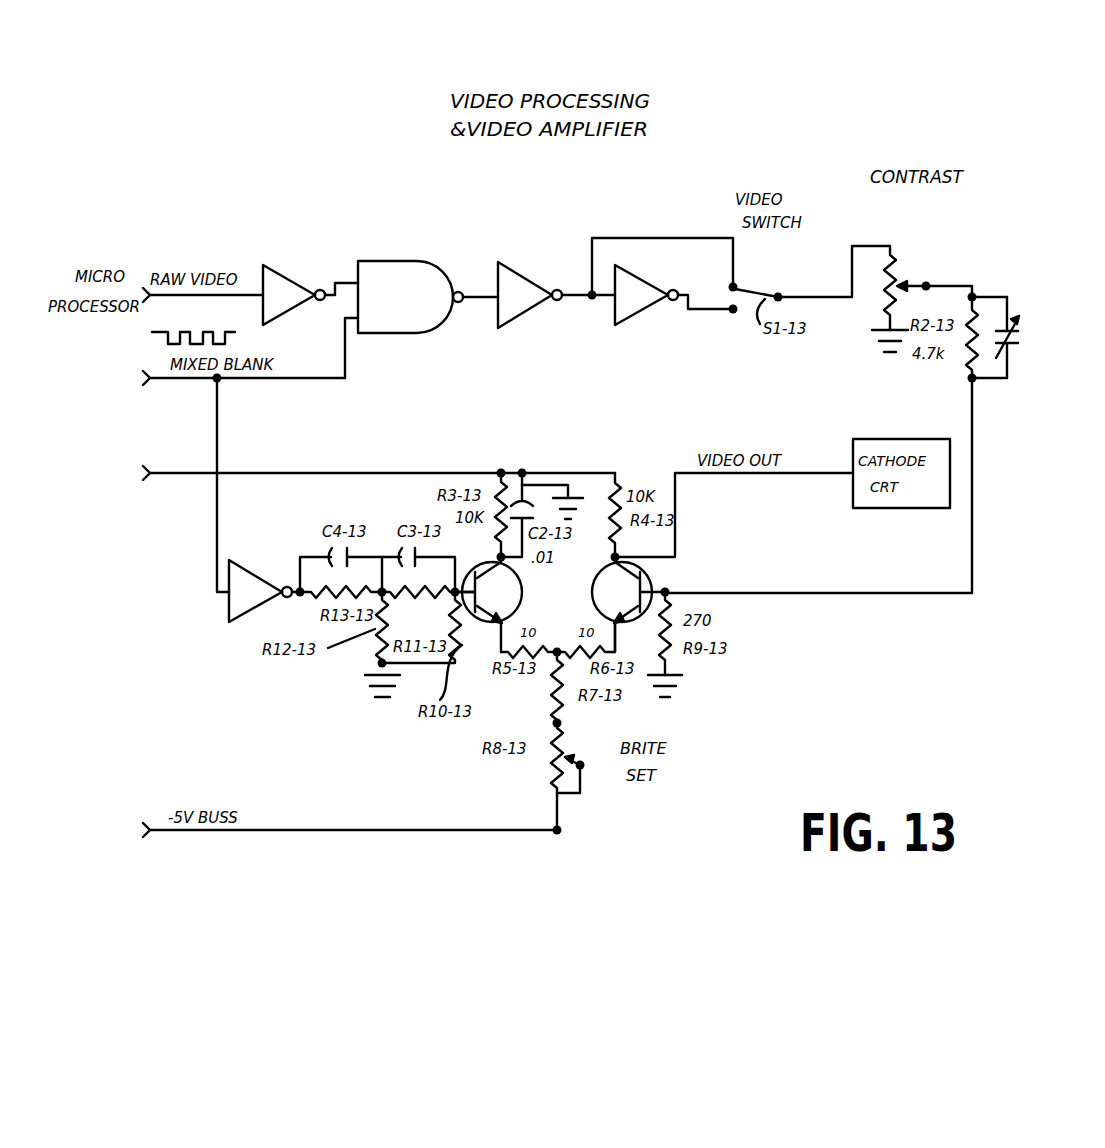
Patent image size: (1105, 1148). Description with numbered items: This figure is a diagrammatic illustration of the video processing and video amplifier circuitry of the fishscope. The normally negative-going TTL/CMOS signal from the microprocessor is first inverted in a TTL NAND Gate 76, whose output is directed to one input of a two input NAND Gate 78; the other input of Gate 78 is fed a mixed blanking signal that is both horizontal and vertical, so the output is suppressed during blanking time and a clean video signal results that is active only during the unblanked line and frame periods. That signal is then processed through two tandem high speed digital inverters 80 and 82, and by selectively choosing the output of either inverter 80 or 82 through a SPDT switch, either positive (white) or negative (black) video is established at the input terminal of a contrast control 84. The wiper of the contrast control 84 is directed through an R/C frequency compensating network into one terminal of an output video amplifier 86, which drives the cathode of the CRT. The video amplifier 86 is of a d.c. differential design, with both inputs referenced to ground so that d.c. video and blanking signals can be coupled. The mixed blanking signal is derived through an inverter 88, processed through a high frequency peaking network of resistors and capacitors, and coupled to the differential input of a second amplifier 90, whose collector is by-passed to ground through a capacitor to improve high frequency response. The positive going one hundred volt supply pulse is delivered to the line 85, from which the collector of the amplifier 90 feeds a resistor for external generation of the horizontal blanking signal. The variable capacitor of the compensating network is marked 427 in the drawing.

The TTL NAND Gate 76 is at (292, 266).
The two input NAND Gate 78 is at (428, 262).
The high speed digital inverter 80 is at (524, 318).
The high speed digital inverter 82 is at (637, 318).
The contrast control 84 is at (953, 285).
The line 85 is at (373, 473).
The output video amplifier 86 is at (662, 579).
The inverter 88 is at (272, 530).
The second amplifier 90 is at (525, 597).
The variable capacitor C1-13 427 is at (1032, 332).